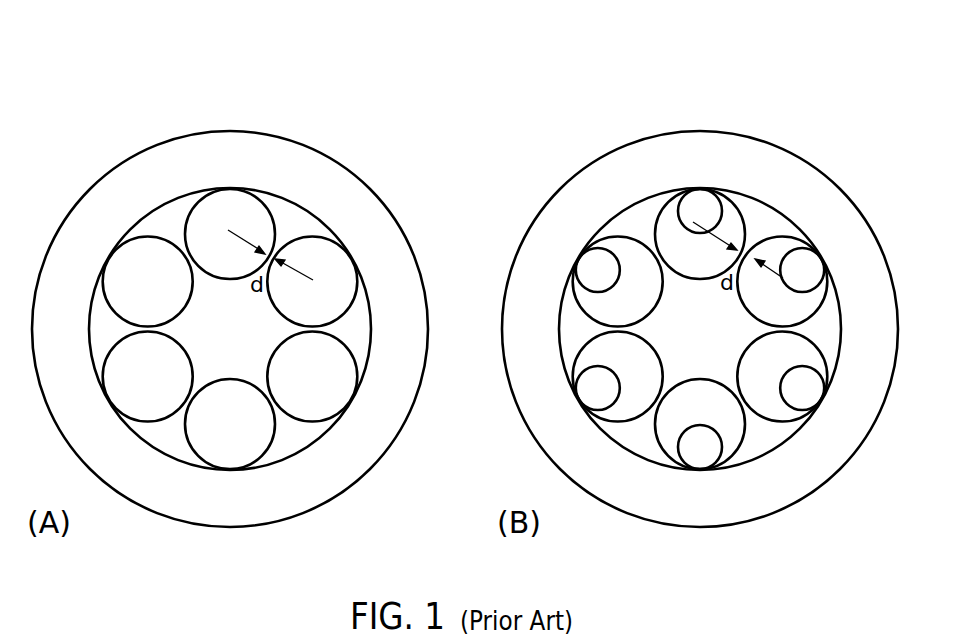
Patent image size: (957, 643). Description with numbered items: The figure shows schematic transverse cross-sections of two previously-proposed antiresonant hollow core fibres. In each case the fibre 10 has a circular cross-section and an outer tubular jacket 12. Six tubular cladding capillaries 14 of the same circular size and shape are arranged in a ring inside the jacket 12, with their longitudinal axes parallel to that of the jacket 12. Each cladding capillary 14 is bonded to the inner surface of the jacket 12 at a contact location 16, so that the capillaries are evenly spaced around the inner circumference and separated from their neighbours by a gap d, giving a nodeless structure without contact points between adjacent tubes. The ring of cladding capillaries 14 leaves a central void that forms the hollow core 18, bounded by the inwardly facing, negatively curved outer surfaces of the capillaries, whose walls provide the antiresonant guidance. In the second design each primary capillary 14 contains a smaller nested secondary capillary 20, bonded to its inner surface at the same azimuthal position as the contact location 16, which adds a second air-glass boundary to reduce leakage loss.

The fibre 10 is at (112, 122).
The outer tubular jacket 12 is at (327, 502).
The cladding capillary 14 is at (273, 217).
The contact location 16 is at (228, 187).
The hollow core 18 is at (247, 338).
The secondary capillary 20 is at (679, 213).